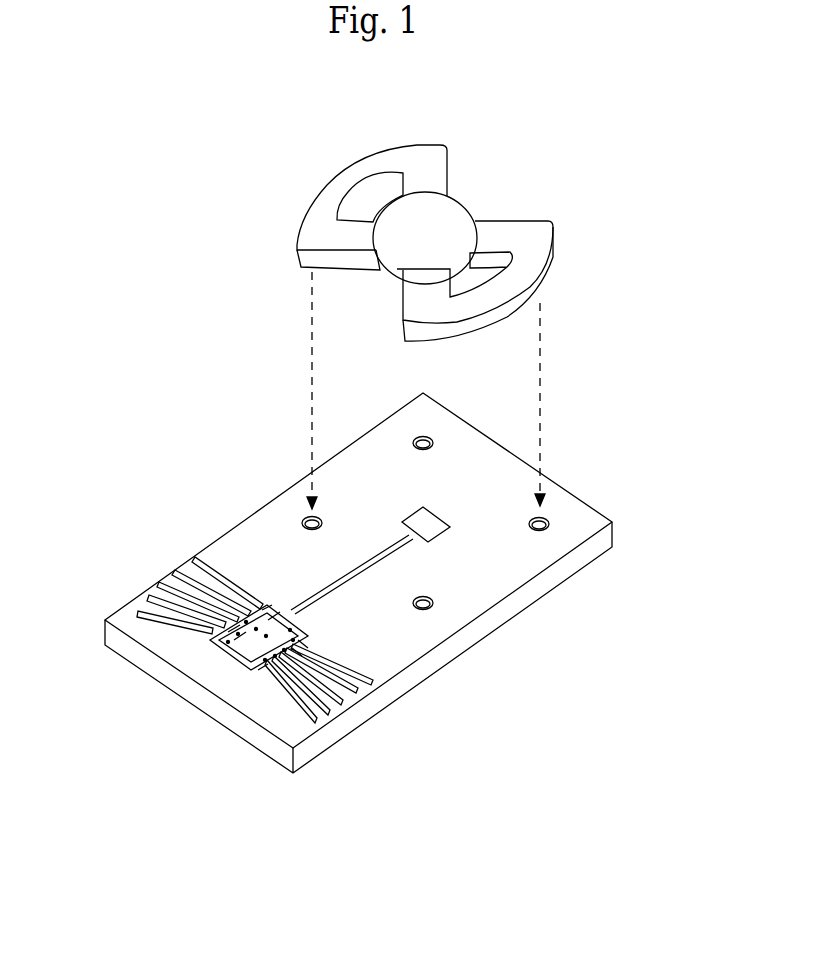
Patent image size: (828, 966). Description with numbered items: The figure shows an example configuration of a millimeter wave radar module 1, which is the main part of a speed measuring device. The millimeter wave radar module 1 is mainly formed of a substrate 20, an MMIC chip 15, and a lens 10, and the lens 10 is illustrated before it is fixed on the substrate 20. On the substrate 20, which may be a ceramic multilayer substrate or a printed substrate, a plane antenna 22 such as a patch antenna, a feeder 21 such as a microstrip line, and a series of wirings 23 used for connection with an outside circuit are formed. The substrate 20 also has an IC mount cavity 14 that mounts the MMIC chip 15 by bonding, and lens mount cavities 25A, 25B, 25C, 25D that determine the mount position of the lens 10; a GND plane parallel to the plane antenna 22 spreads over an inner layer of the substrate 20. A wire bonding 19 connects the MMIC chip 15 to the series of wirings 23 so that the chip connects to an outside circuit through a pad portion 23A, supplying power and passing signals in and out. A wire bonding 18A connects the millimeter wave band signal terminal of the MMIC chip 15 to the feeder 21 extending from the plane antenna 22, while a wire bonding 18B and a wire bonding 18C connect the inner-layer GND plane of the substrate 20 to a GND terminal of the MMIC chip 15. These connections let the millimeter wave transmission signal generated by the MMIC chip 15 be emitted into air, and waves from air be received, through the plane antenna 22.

The millimeter wave radar module 1 is at (127, 166).
The lens 10 is at (443, 207).
The IC mount cavity 14 is at (217, 653).
The MMIC chip 15 is at (245, 650).
The wire bonding 18A is at (290, 612).
The wire bonding 18B is at (247, 615).
The wire bonding 18C is at (292, 617).
The wire bonding 19 is at (266, 670).
The substrate 20 is at (567, 568).
The feeder 21 is at (330, 584).
The plane antenna 22 is at (415, 512).
The series of wirings 23 is at (280, 685).
The pad portion 23A is at (303, 723).
The lens mount cavity 25A is at (548, 521).
The lens mount cavity 25B is at (432, 606).
The lens mount cavity 25C is at (318, 530).
The lens mount cavity 25D is at (431, 437).